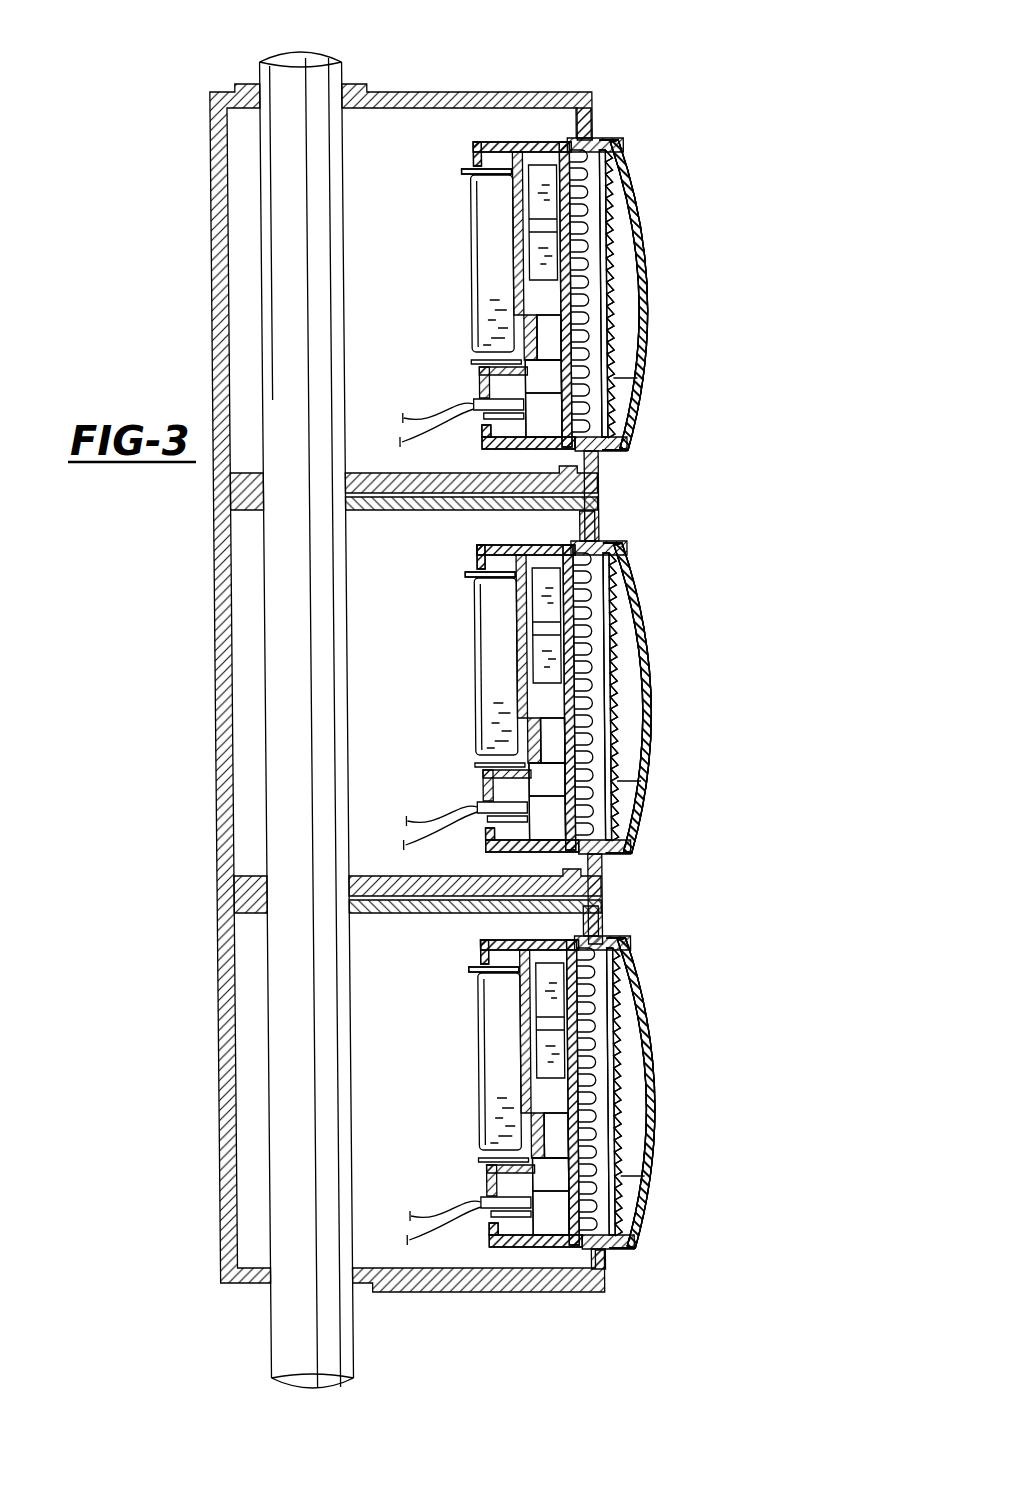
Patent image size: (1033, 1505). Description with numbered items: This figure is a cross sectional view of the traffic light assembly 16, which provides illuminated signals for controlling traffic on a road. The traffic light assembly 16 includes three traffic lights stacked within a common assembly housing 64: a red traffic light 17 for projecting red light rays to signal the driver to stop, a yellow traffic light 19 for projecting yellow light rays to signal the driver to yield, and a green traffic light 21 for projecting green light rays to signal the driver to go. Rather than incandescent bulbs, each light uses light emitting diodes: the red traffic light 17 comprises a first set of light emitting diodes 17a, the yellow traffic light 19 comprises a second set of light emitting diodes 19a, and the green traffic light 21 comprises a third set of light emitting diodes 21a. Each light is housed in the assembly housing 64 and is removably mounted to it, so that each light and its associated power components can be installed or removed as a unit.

The traffic light assembly 16 is at (172, 193).
The red traffic light 17 is at (625, 381).
The first set of light emitting diodes 17a is at (609, 274).
The yellow traffic light 19 is at (628, 816).
The second set of light emitting diodes 19a is at (633, 698).
The green traffic light 21 is at (632, 1205).
The third set of light emitting diodes 21a is at (628, 1093).
The assembly housing 64 is at (534, 1293).